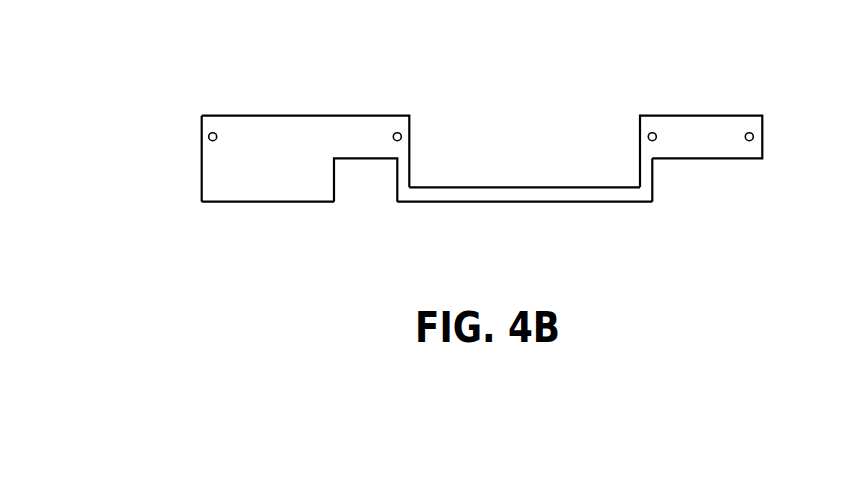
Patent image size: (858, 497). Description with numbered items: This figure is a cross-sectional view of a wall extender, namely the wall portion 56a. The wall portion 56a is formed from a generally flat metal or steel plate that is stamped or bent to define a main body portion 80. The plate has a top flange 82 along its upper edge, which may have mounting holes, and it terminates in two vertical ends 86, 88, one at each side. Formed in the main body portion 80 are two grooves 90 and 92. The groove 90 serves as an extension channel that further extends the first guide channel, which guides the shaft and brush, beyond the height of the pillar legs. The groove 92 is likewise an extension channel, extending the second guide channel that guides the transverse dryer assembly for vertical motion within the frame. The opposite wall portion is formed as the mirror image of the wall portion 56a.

The wall portion 56a is at (567, 63).
The main body portion 80 is at (525, 204).
The top flange 82 is at (287, 130).
The vertical end 86 is at (201, 172).
The vertical end 88 is at (762, 137).
The groove 90 is at (372, 200).
The groove 92 is at (715, 202).